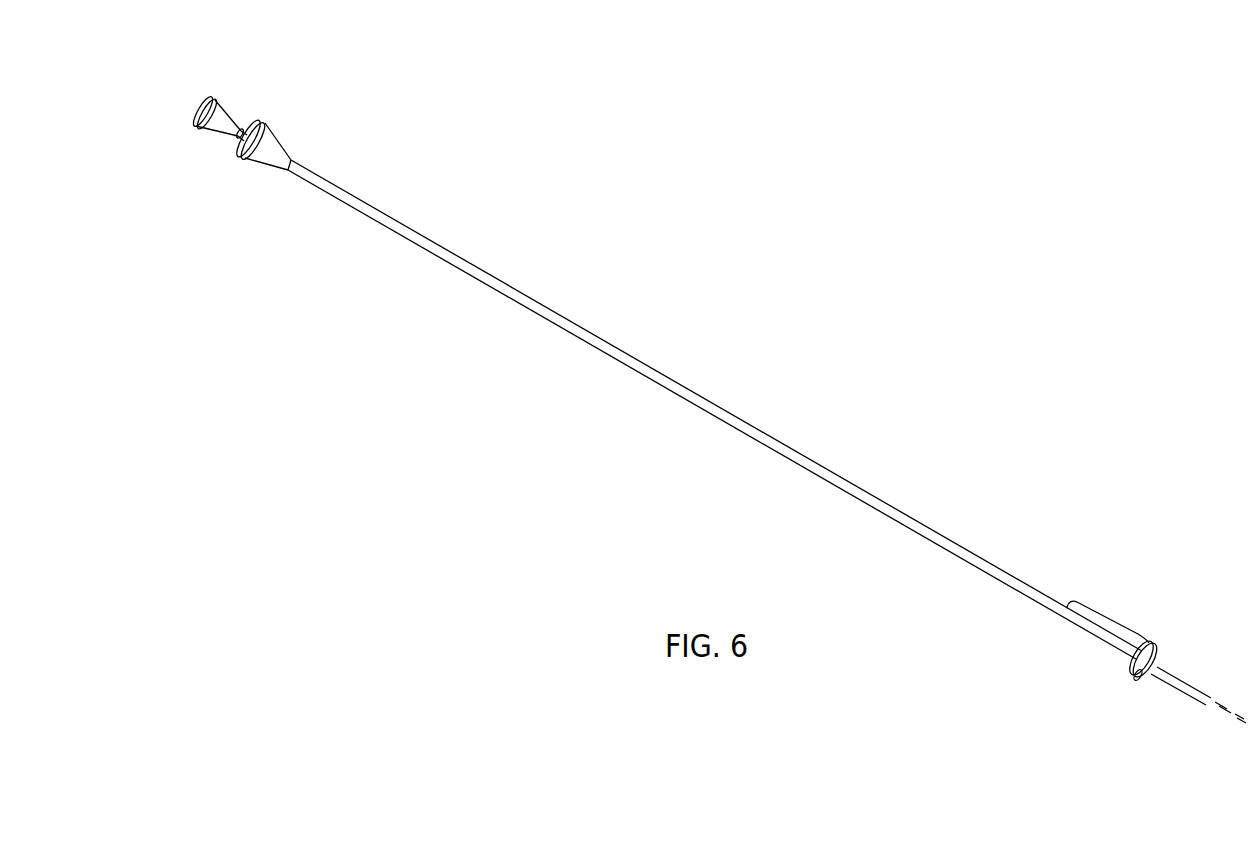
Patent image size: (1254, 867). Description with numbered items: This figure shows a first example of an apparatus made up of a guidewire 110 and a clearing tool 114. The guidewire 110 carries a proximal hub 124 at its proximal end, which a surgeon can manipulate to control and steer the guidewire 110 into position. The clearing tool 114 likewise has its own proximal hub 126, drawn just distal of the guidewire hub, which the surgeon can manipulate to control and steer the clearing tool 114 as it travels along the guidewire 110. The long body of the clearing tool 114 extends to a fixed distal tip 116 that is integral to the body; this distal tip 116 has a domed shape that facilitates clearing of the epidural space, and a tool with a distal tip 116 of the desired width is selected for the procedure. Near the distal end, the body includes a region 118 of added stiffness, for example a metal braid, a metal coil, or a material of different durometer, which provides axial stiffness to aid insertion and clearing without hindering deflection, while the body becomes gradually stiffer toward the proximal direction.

The guidewire 110 is at (250, 136).
The clearing tool 114 is at (591, 348).
The distal tip 116 is at (1165, 649).
The region 118 is at (1105, 621).
The proximal hub 124 is at (200, 106).
The proximal hub 126 is at (266, 123).